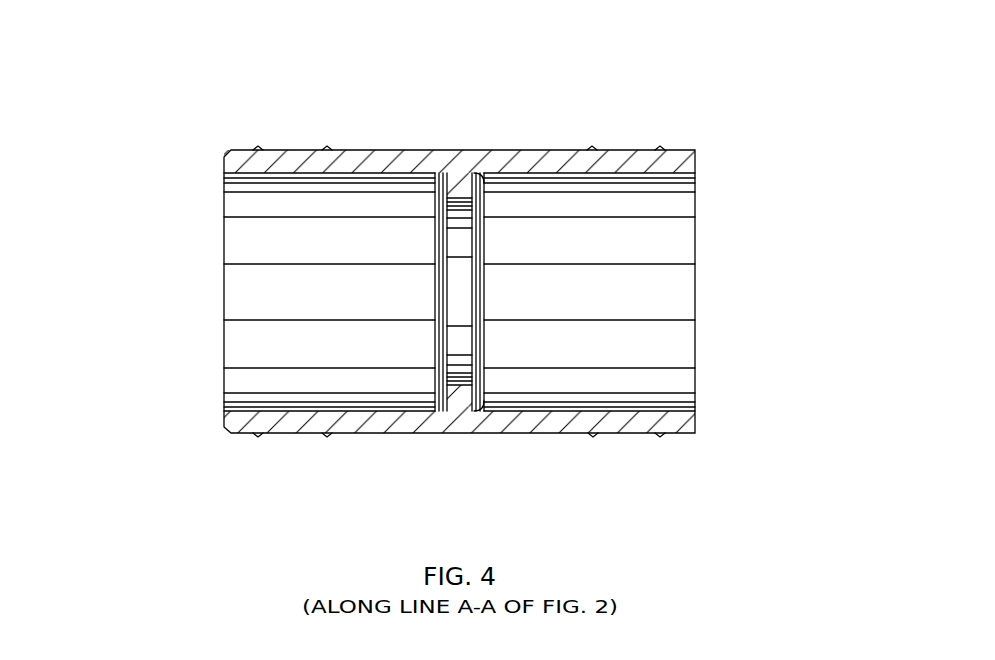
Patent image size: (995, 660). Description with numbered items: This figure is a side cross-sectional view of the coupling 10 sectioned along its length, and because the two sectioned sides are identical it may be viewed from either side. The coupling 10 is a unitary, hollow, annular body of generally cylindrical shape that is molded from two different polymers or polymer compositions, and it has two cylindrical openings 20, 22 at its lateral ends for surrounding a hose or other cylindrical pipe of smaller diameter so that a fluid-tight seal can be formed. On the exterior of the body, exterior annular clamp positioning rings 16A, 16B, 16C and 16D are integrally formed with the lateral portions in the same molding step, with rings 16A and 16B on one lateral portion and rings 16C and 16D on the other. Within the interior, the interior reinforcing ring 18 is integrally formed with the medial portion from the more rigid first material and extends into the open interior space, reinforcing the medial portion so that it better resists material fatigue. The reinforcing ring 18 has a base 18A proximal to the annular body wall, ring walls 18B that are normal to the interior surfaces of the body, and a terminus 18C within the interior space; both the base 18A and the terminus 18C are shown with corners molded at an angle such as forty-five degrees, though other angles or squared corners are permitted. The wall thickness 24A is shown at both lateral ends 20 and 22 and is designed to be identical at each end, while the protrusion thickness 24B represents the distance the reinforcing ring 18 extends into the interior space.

The coupling 10 is at (756, 109).
The exterior annular clamp positioning ring 16A is at (247, 138).
The exterior annular clamp positioning ring 16B is at (314, 138).
The exterior annular clamp positioning ring 16C is at (607, 448).
The exterior annular clamp positioning ring 16D is at (672, 447).
The interior reinforcing ring 18 is at (461, 194).
The base of the reinforcing ring 18A is at (496, 185).
The ring walls 18B is at (425, 198).
The terminus of the reinforcing ring 18C is at (490, 204).
The cylindrical opening 20 is at (200, 274).
The cylindrical opening 22 is at (717, 299).
The wall thickness 24A is at (223, 150).
The protrusion thickness 24B is at (223, 174).